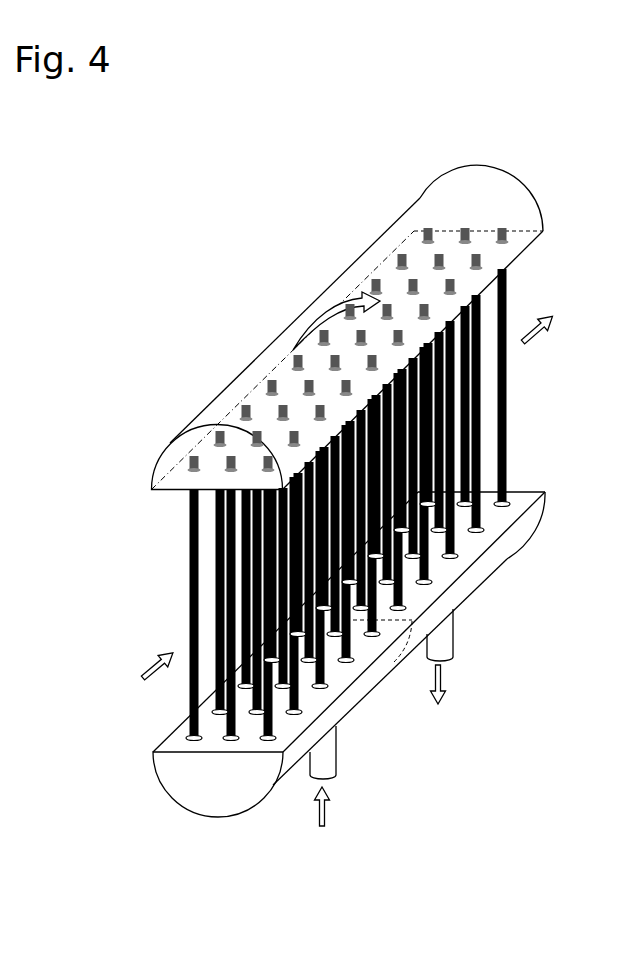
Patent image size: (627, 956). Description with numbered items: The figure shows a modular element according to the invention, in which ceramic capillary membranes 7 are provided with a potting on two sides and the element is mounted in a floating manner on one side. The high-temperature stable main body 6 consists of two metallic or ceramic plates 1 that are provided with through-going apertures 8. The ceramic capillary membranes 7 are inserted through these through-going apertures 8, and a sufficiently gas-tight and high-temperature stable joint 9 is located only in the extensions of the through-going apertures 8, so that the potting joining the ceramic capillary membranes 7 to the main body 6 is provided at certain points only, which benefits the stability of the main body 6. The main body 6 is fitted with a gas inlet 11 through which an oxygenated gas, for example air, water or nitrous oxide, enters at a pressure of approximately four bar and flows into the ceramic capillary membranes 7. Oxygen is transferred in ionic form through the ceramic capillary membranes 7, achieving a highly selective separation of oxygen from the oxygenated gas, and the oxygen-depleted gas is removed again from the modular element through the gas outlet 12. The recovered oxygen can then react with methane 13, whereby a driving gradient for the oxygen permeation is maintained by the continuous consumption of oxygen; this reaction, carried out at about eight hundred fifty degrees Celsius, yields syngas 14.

The metallic or ceramic plate 1 is at (190, 477).
The high-temperature stable main body 6 is at (508, 560).
The ceramic capillary membranes 7 is at (508, 464).
The through-going apertures 8 is at (501, 241).
The gas-tight and high-temperature stable joint 9 is at (464, 236).
The gas inlet 11 is at (336, 765).
The gas outlet 12 is at (450, 660).
The methane 13 is at (140, 678).
The syngas 14 is at (551, 317).